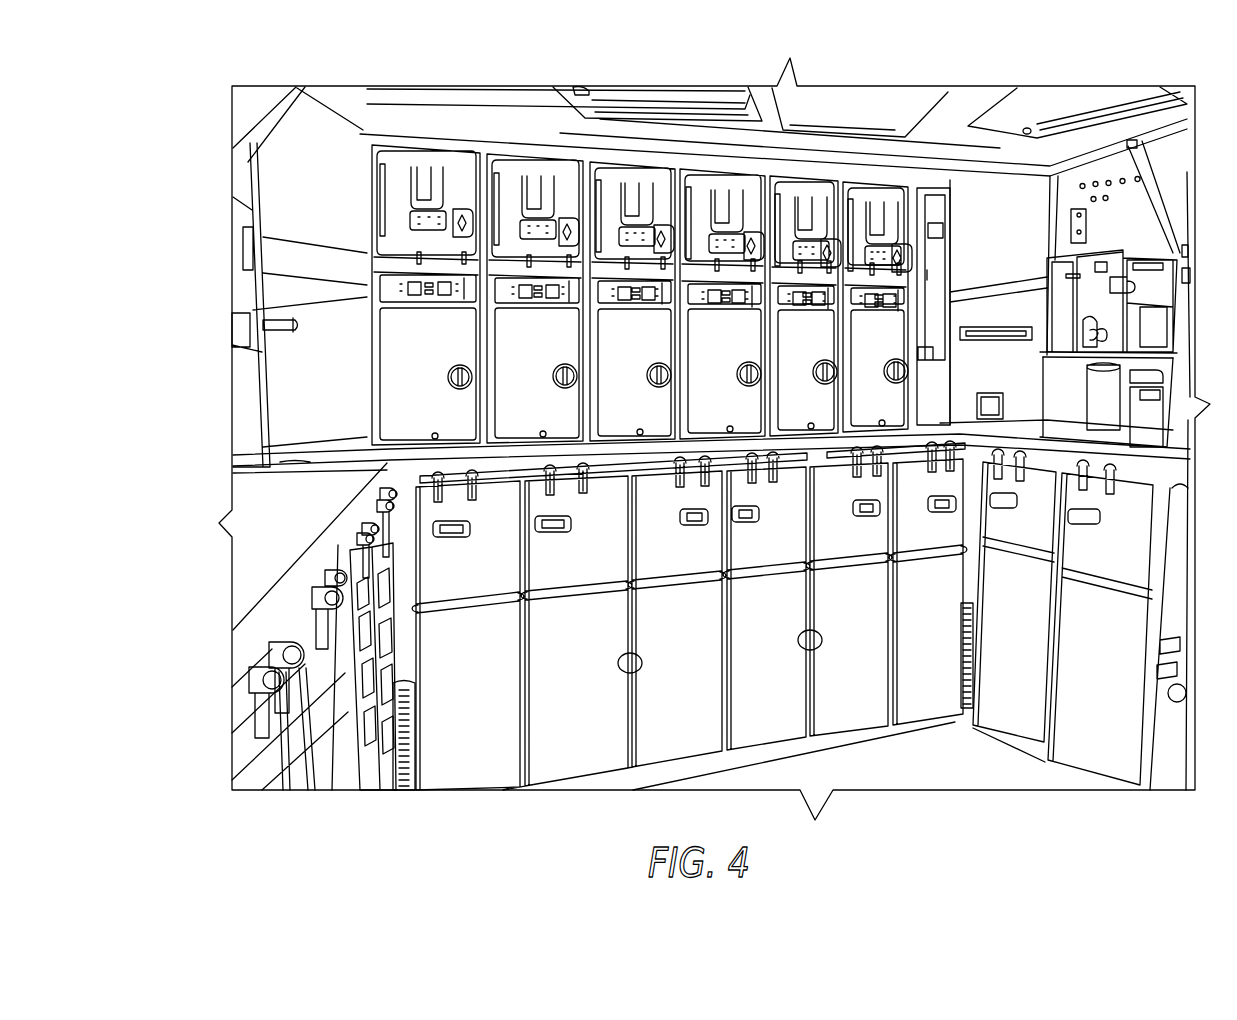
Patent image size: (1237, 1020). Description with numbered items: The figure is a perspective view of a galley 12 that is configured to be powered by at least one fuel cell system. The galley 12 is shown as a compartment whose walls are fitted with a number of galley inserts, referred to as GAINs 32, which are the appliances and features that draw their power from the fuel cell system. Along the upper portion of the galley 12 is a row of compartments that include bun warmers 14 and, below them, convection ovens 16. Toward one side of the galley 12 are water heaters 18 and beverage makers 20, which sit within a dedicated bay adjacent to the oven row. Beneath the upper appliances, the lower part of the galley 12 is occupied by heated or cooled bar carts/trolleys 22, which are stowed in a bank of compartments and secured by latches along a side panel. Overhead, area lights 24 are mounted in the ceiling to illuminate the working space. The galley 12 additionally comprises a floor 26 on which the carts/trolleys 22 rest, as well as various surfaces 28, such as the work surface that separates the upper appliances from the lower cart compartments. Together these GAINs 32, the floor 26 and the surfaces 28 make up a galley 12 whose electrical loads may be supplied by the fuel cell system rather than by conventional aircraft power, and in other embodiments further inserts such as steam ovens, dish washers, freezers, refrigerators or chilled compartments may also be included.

The galley 12 is at (1122, 800).
The bun warmers 14 is at (878, 203).
The convection ovens 16 is at (853, 398).
The water heaters 18 is at (1090, 300).
The beverage makers 20 is at (1153, 332).
The heated or cooled bar carts/trolleys 22 is at (349, 567).
The area lights 24 is at (1050, 108).
The floor 26 is at (952, 760).
The surfaces 28 is at (318, 495).
The GAINs 32 is at (1178, 255).